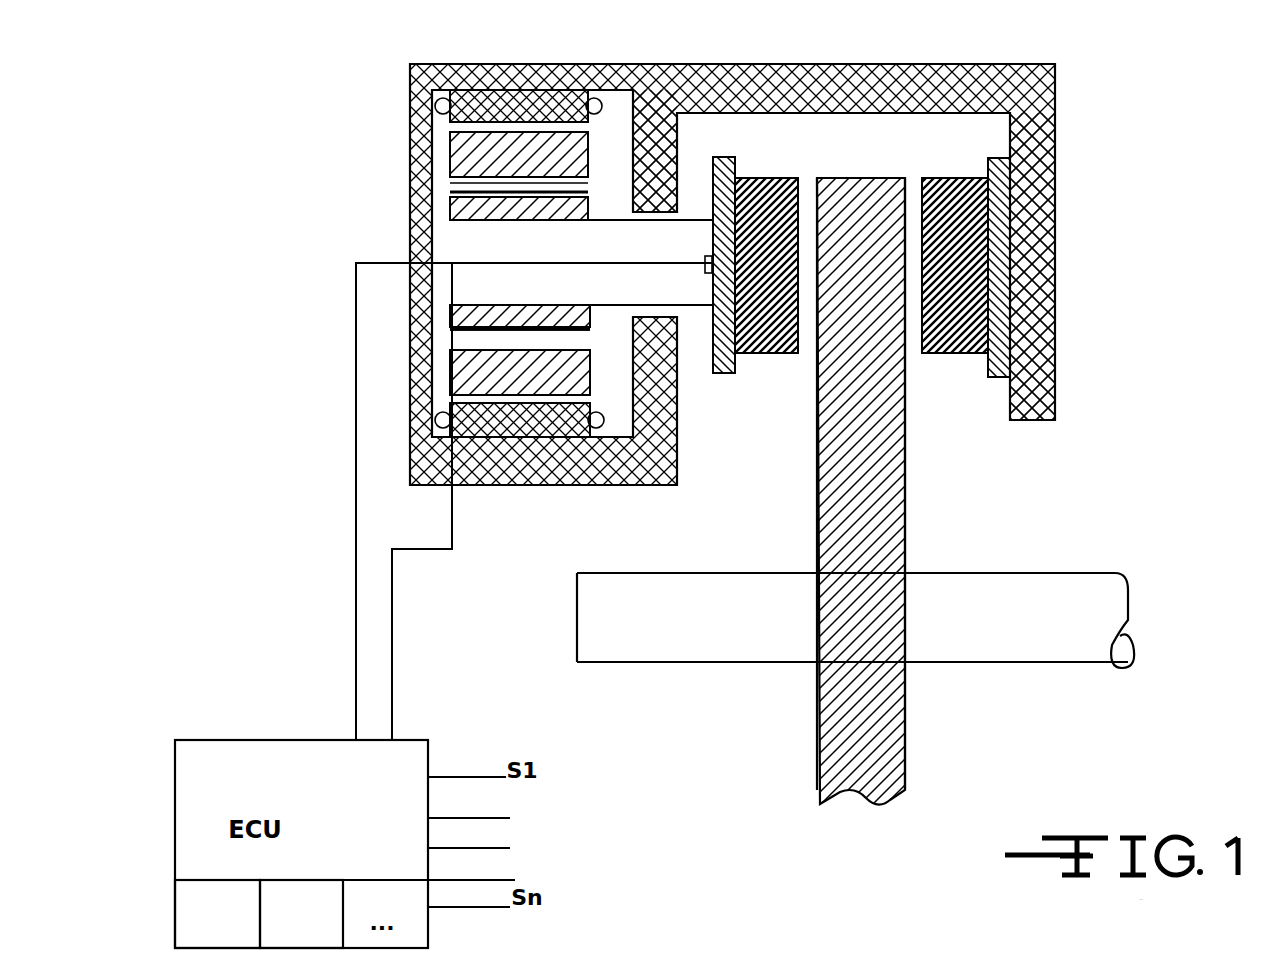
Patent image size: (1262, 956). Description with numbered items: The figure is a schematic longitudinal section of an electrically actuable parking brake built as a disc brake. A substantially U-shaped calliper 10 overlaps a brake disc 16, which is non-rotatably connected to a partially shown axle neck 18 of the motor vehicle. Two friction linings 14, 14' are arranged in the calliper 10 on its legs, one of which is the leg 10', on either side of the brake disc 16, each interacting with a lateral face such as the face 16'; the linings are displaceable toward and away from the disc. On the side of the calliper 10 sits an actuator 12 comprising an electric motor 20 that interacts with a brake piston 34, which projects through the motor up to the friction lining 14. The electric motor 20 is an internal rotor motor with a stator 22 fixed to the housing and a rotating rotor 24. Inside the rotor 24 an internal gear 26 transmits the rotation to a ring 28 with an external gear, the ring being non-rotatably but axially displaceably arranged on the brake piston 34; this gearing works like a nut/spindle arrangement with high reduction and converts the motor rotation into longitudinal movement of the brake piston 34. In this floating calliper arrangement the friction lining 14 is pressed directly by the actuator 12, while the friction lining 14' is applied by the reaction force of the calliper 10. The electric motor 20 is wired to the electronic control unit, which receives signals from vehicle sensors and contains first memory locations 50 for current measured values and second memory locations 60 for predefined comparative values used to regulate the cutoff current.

The calliper 10 is at (768, 274).
The leg of the calliper 10' is at (680, 151).
The actuator 12 is at (344, 465).
The friction lining 14 is at (768, 244).
The friction lining 14' is at (943, 244).
The brake disc 16 is at (875, 491).
The lateral face of the brake disc 16' is at (781, 484).
The axle neck 18 is at (937, 613).
The electric motor 20 is at (547, 346).
The stator 22 is at (560, 445).
The rotor 24 is at (566, 379).
The internal gear 26 is at (540, 340).
The ring with external gear 28 is at (563, 322).
The brake piston 34 is at (470, 260).
The first memory location 50 is at (217, 914).
The second memory location 60 is at (301, 914).